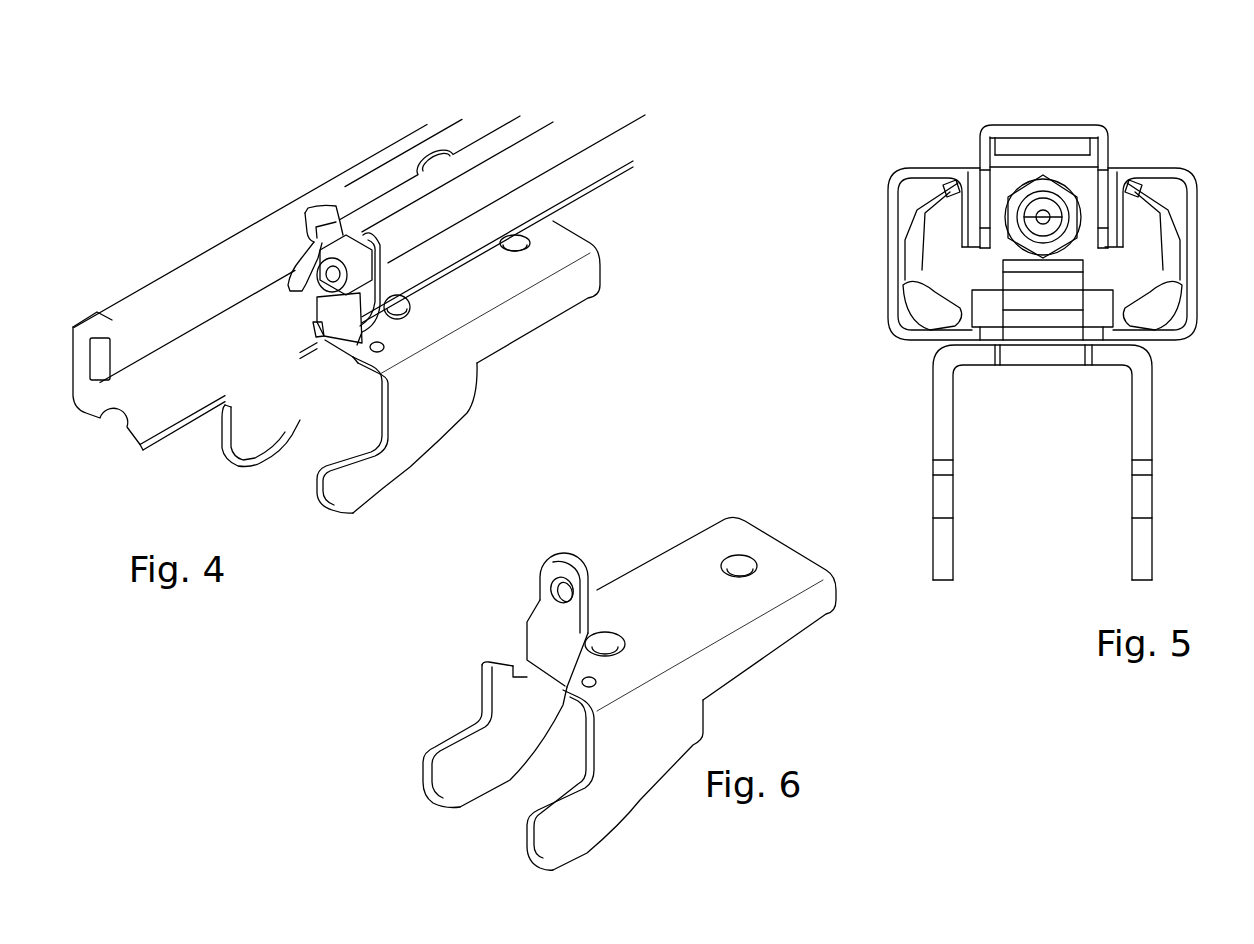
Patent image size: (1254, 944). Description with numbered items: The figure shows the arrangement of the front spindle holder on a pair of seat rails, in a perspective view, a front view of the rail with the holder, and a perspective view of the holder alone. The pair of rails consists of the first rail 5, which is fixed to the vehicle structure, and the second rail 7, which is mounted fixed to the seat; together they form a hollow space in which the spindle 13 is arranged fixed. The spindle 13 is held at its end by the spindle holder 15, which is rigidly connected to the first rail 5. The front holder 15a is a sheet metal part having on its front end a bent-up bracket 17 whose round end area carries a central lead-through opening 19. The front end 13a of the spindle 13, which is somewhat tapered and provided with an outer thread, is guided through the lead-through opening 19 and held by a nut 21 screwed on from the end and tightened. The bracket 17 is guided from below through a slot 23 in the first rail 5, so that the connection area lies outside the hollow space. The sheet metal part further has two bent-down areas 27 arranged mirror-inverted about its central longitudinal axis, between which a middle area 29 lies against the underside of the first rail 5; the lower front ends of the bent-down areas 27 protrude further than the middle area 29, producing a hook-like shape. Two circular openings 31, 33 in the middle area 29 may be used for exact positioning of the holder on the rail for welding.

In FIG. 4, the first rail 5 is at (180, 272).
In FIG. 5, the first rail 5 is at (1193, 283).
In FIG. 4, the second rail 7 is at (387, 177).
In FIG. 5, the second rail 7 is at (983, 135).
In FIG. 4, the spindle 13 is at (570, 145).
In FIG. 5, the spindle 13 is at (1043, 217).
In FIG. 4, the front end of the spindle 13a is at (333, 273).
In FIG. 4, the spindle holder 15 is at (440, 405).
In FIG. 4, the front holder 15a is at (507, 330).
In FIG. 5, the front holder 15a is at (1147, 405).
In FIG. 6, the front holder 15a is at (680, 568).
In FIG. 6, the bent-up bracket 17 is at (562, 622).
In FIG. 6, the lead-through opening 19 is at (568, 588).
In FIG. 4, the nut 21 is at (342, 253).
In FIG. 5, the nut 21 is at (1072, 198).
In FIG. 4, the slot 23 is at (313, 333).
In FIG. 4, the bent-down areas 27 is at (375, 482).
In FIG. 5, the bent-down areas 27 is at (1148, 448).
In FIG. 6, the bent-down areas 27 is at (637, 775).
In FIG. 6, the middle area 29 is at (713, 633).
In FIG. 6, the opening 31 is at (605, 645).
In FIG. 6, the opening 33 is at (733, 572).